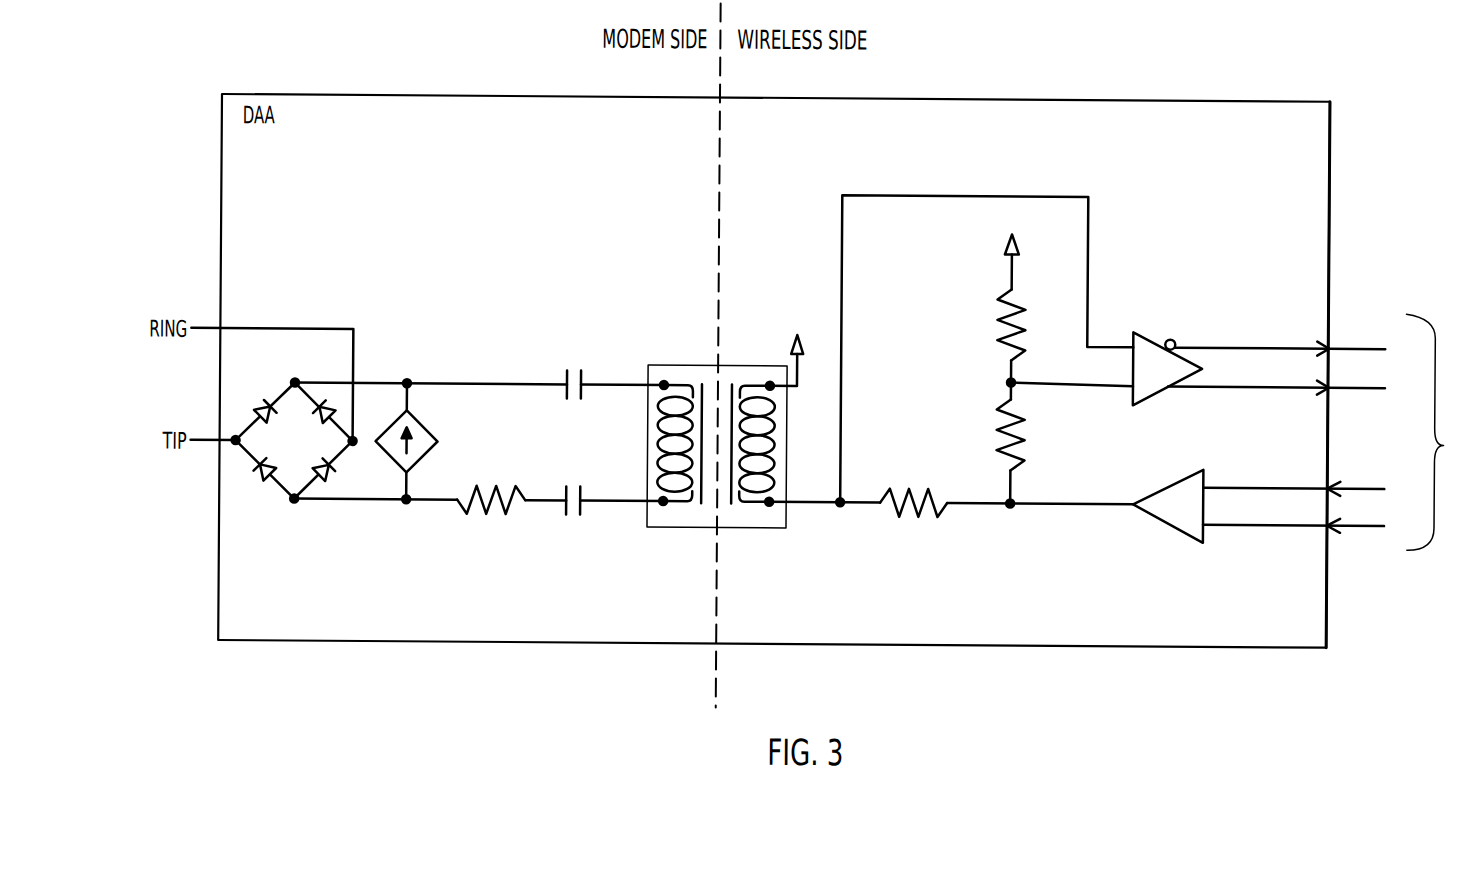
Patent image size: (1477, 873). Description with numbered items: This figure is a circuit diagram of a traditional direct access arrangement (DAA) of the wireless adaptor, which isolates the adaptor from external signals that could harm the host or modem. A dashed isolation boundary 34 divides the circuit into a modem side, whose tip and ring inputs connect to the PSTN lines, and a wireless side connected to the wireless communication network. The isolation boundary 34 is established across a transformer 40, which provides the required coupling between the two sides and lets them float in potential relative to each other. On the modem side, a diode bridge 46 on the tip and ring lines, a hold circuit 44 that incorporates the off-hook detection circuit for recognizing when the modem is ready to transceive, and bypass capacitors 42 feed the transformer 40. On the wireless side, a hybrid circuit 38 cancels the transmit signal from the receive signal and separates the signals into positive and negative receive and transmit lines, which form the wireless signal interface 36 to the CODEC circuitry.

The isolation boundary 34 is at (722, 241).
The wireless signal interface 36 is at (1435, 432).
The hybrid circuit 38 is at (940, 351).
The transformer 40 is at (729, 361).
The bypass capacitors 42 is at (565, 485).
The hold circuit 44 is at (424, 423).
The diode bridge 46 is at (308, 455).